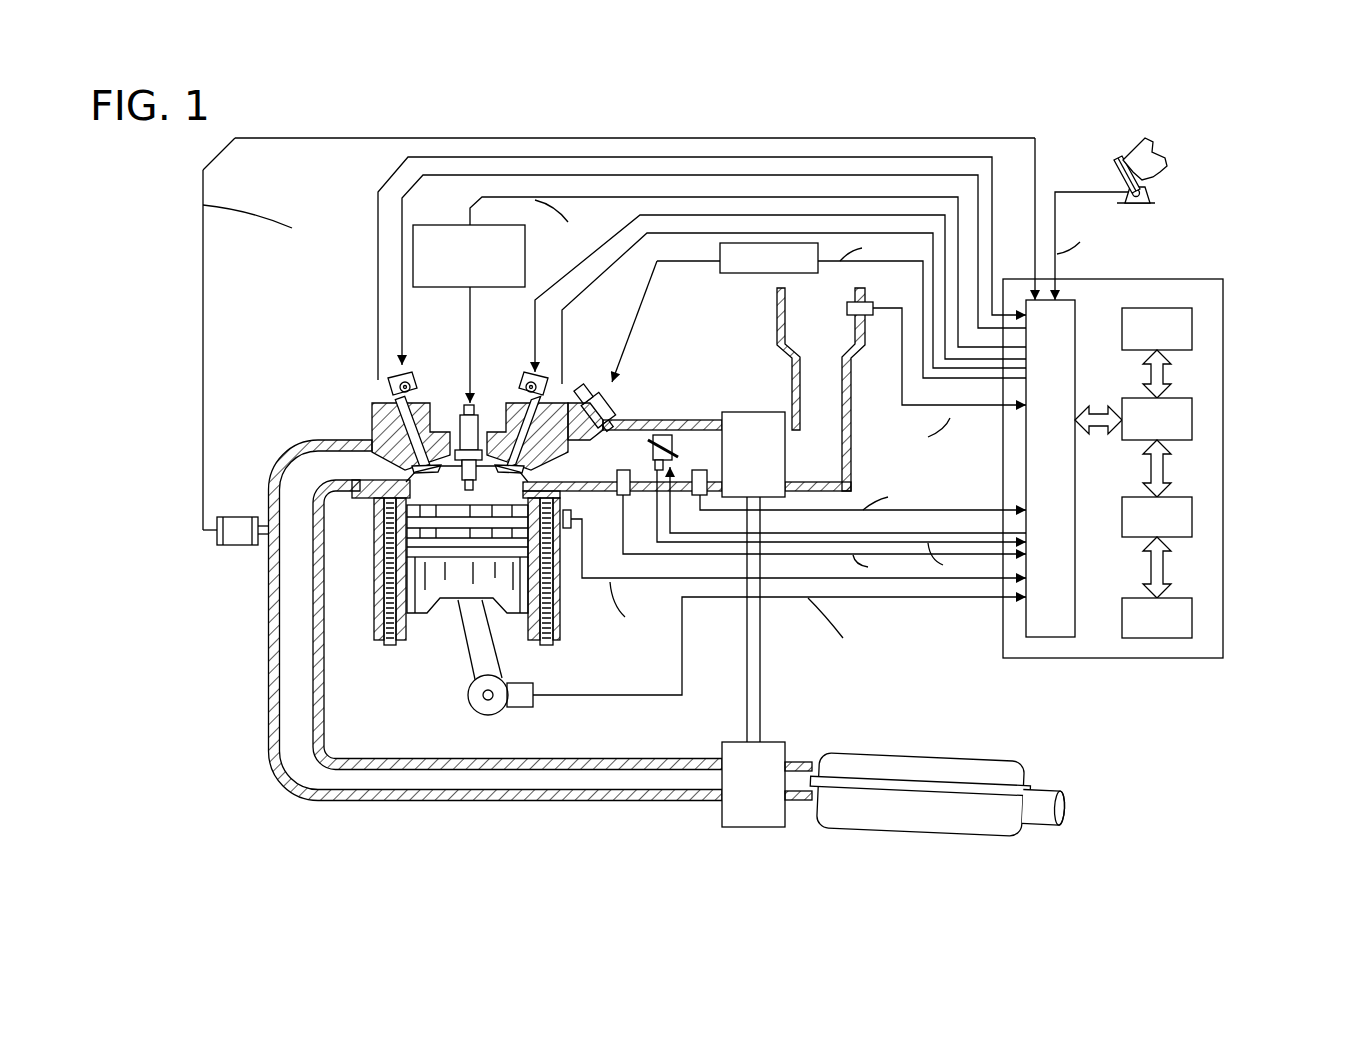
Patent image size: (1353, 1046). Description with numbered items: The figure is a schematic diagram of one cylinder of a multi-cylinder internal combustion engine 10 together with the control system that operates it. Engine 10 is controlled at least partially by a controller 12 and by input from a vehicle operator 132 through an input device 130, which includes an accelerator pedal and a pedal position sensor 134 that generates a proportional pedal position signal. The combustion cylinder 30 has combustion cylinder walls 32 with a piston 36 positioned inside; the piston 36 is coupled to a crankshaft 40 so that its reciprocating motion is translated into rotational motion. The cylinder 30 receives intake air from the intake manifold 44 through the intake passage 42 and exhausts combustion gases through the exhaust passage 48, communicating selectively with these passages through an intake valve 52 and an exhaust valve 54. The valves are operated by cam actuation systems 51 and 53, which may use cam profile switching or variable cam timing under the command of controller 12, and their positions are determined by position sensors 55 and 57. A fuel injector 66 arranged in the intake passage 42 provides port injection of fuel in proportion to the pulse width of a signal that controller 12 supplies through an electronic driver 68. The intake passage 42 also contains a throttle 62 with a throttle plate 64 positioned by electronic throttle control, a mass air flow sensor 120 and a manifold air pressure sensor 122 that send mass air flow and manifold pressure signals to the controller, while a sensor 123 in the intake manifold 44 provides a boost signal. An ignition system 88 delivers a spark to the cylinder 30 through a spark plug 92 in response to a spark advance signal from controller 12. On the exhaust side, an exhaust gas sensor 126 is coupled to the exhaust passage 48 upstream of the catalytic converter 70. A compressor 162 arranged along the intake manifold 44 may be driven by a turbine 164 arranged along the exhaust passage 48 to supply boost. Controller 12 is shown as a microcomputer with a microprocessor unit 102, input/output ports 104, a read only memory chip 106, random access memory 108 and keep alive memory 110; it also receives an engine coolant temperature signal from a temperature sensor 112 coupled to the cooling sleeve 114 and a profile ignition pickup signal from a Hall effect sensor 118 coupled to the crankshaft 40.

The internal combustion engine 10 is at (310, 360).
The controller 12 is at (1210, 279).
The combustion cylinder 30 is at (467, 498).
The combustion cylinder walls 32 is at (412, 632).
The piston 36 is at (470, 590).
The crankshaft 40 is at (480, 710).
The intake passage 42 is at (805, 359).
The intake manifold 44 is at (734, 389).
The exhaust passage 48 is at (496, 620).
The cam actuation system 51 is at (530, 373).
The intake valve 52 is at (507, 473).
The cam actuation system 53 is at (410, 377).
The exhaust valve 54 is at (427, 478).
The position sensor 55 is at (550, 392).
The position sensor 57 is at (393, 380).
The throttle 62 is at (662, 433).
The throttle plate 64 is at (682, 452).
The fuel injector 66 is at (592, 396).
The electronic driver 68 is at (727, 273).
The catalytic converter 70 is at (990, 760).
The ignition system 88 is at (425, 225).
The spark plug 92 is at (472, 400).
The microprocessor unit 102 is at (1192, 415).
The input/output ports 104 is at (1075, 308).
The read only memory chip 106 is at (1192, 325).
The random access memory 108 is at (1192, 515).
The keep alive memory 110 is at (1192, 615).
The temperature sensor 112 is at (577, 527).
The cooling sleeve 114 is at (548, 598).
The Hall effect sensor 118 is at (522, 707).
The mass air flow sensor 120 is at (866, 315).
The manifold air pressure sensor 122 is at (618, 493).
The sensor 123 is at (696, 496).
The exhaust gas sensor 126 is at (217, 517).
The input device 130 is at (1118, 163).
The vehicle operator 132 is at (1165, 157).
The pedal position sensor 134 is at (1148, 192).
The compressor 162 is at (753, 577).
The turbine 164 is at (767, 784).